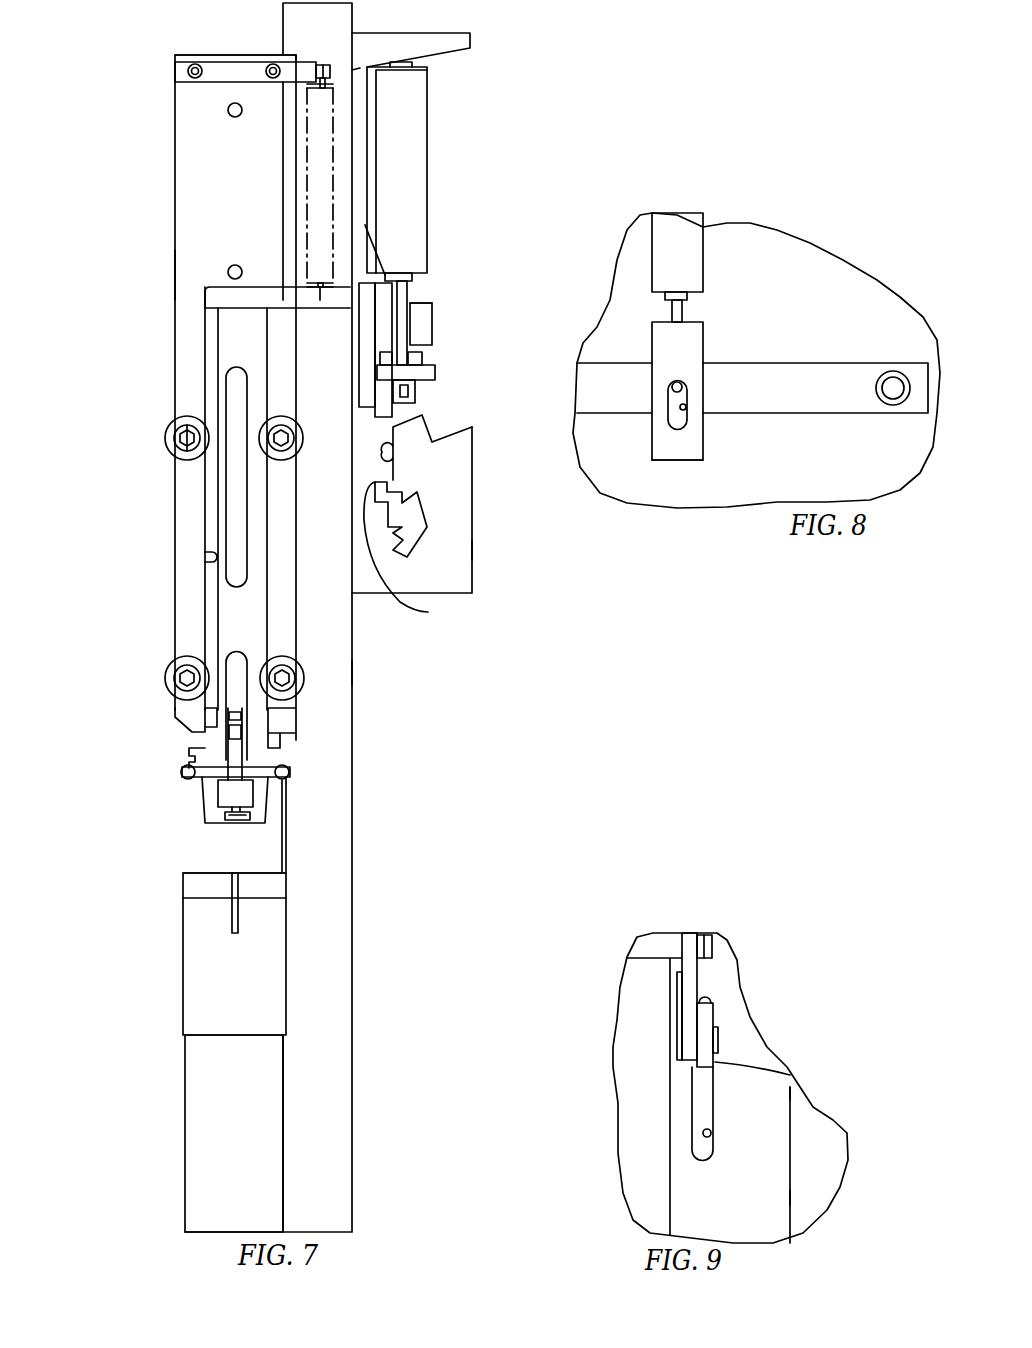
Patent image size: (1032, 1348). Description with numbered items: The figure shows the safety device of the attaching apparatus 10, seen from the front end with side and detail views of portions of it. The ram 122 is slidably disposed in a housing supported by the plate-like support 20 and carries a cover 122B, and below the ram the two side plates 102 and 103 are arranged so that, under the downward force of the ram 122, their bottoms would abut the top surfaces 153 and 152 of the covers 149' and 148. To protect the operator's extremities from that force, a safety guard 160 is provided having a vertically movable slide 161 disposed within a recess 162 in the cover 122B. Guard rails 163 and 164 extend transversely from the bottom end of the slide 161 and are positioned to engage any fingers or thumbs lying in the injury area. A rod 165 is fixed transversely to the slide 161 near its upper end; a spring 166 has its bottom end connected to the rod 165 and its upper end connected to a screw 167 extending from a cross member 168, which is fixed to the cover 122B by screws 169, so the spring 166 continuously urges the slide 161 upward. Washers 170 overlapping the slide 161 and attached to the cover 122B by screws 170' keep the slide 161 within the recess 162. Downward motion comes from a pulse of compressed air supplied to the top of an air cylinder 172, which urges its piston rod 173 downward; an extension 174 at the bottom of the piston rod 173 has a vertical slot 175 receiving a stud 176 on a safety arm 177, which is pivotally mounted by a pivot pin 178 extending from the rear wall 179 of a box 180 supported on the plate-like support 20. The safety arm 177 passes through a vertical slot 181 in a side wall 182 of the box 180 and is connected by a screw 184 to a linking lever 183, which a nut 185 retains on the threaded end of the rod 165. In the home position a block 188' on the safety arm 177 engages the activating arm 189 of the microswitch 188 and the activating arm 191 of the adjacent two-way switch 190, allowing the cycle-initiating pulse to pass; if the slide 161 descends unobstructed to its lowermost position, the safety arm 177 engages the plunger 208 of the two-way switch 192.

In FIG. 7, the attaching apparatus 10 is at (432, 672).
In FIG. 7, the plate-like support 20 is at (364, 766).
In FIG. 9, the plate-like support 20 is at (672, 1192).
In FIG. 7, the side plate 102 is at (203, 815).
In FIG. 7, the side plate 103 is at (268, 818).
In FIG. 7, the ram 122 is at (163, 176).
In FIG. 7, the cover 122B is at (173, 277).
In FIG. 7, the cover 148 is at (287, 887).
In FIG. 7, the cover 149' is at (187, 1058).
In FIG. 7, the top surface 152 is at (263, 872).
In FIG. 7, the top surface 153 is at (208, 873).
In FIG. 7, the safety guard 160 is at (194, 626).
In FIG. 7, the vertically movable slide 161 is at (250, 627).
In FIG. 7, the recess 162 is at (207, 562).
In FIG. 7, the guard rail 163 is at (182, 775).
In FIG. 7, the guard rail 164 is at (290, 779).
In FIG. 7, the rod 165 is at (216, 308).
In FIG. 7, the spring 166 is at (307, 163).
In FIG. 7, the screw 167 is at (323, 63).
In FIG. 7, the cross member 168 is at (213, 82).
In FIG. 7, the screws 169 is at (188, 67).
In FIG. 7, the washers 170 is at (189, 555).
In FIG. 7, the screws 170' is at (133, 453).
In FIG. 7, the air cylinder 172 is at (427, 137).
In FIG. 8, the air cylinder 172 is at (703, 258).
In FIG. 7, the piston rod 173 is at (410, 292).
In FIG. 8, the piston rod 173 is at (683, 311).
In FIG. 8, the extension 174 is at (703, 344).
In FIG. 8, the vertical slot 175 is at (686, 408).
In FIG. 8, the stud 176 is at (673, 397).
In FIG. 7, the safety arm 177 is at (424, 418).
In FIG. 8, the safety arm 177 is at (620, 363).
In FIG. 9, the safety arm 177 is at (800, 1087).
In FIG. 8, the pivot pin 178 is at (885, 373).
In FIG. 8, the rear wall 179 is at (755, 492).
In FIG. 7, the box 180 is at (486, 547).
In FIG. 9, the box 180 is at (805, 1197).
In FIG. 7, the vertical slot 181 is at (393, 462).
In FIG. 9, the vertical slot 181 is at (710, 1137).
In FIG. 7, the side wall 182 is at (460, 575).
In FIG. 9, the side wall 182 is at (738, 1112).
In FIG. 7, the linking lever 183 is at (360, 377).
In FIG. 9, the linking lever 183 is at (677, 1022).
In FIG. 7, the screw 184 is at (416, 397).
In FIG. 9, the screw 184 is at (718, 1038).
In FIG. 7, the nut 185 is at (409, 322).
In FIG. 7, the switch 188 is at (487, 302).
In FIG. 7, the block 188' is at (449, 370).
In FIG. 7, the activating arm 189 is at (422, 358).
In FIG. 7, the two-way switch 190 is at (385, 325).
In FIG. 7, the activating arm 191 is at (385, 358).
In FIG. 7, the two-way switch 192 is at (403, 510).
In FIG. 7, the plunger 208 is at (411, 553).